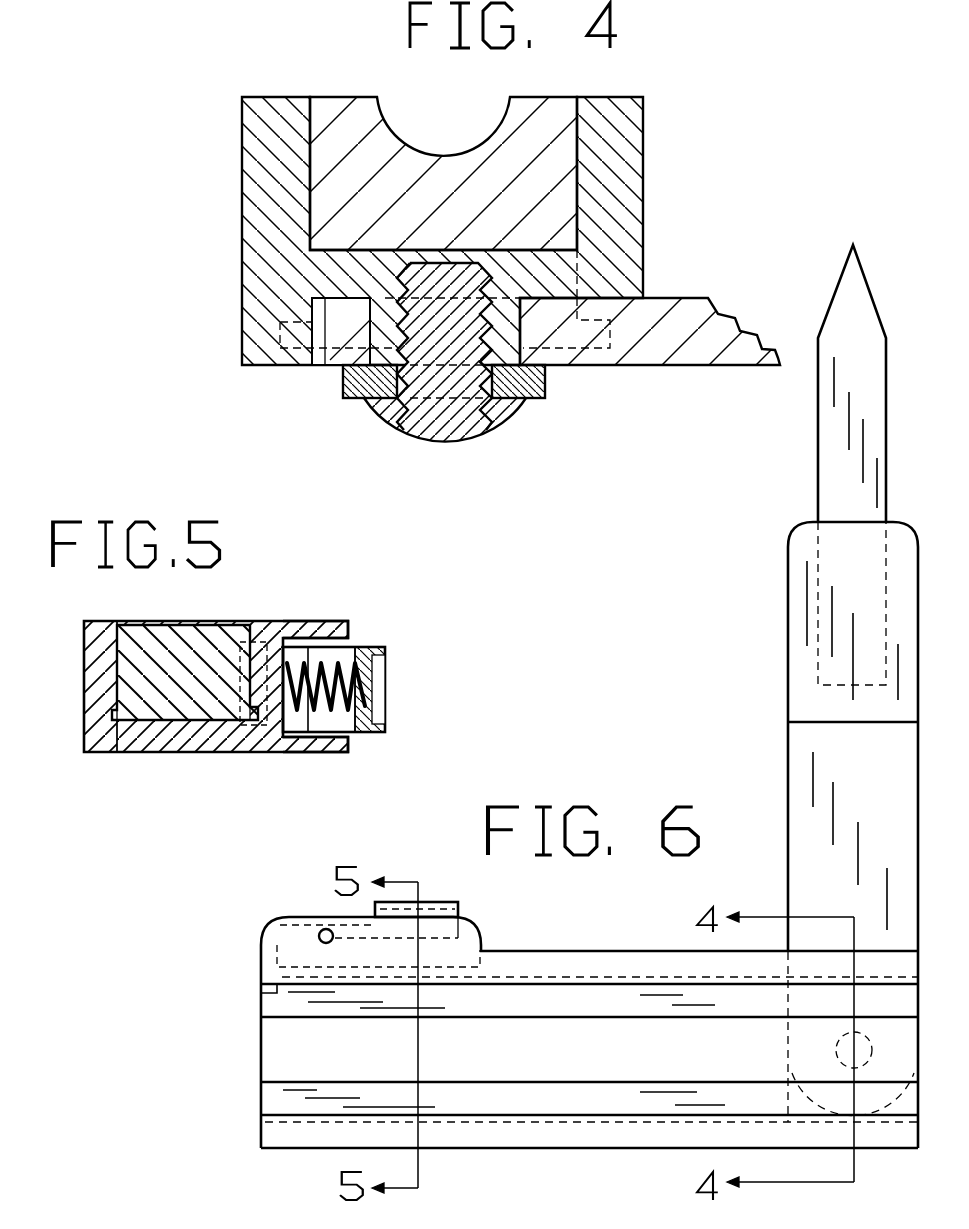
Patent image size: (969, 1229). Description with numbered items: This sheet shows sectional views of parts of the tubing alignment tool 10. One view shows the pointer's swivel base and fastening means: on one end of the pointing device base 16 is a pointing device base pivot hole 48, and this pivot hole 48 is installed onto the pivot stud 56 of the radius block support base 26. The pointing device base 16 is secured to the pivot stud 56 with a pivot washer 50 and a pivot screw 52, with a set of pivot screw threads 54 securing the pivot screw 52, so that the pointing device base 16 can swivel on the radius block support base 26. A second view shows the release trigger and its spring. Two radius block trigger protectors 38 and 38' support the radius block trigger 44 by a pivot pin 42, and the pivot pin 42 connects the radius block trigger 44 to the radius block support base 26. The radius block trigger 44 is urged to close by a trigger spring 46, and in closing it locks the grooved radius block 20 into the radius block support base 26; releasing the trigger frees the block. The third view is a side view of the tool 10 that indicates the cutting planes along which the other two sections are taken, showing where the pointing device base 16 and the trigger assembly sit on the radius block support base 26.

In FIG. 6, the tubing alignment tool 10 is at (787, 695).
In FIG. 4, the pointing device base 16 is at (688, 367).
In FIG. 4, the grooved radius block 20 is at (372, 97).
In FIG. 4, the radius block support base 26 is at (643, 202).
In FIG. 5, the trigger protector 38 is at (316, 596).
In FIG. 5, the trigger protector 38' is at (337, 776).
In FIG. 5, the pivot pin 42 is at (345, 649).
In FIG. 5, the radius block trigger 44 is at (373, 683).
In FIG. 5, the trigger spring 46 is at (355, 742).
In FIG. 4, the pointing device base pivot hole 48 is at (522, 325).
In FIG. 4, the pivot washer 50 is at (538, 398).
In FIG. 4, the pivot screw 52 is at (443, 440).
In FIG. 4, the pivot screw threads 54 is at (390, 415).
In FIG. 4, the pivot stud 56 is at (343, 273).